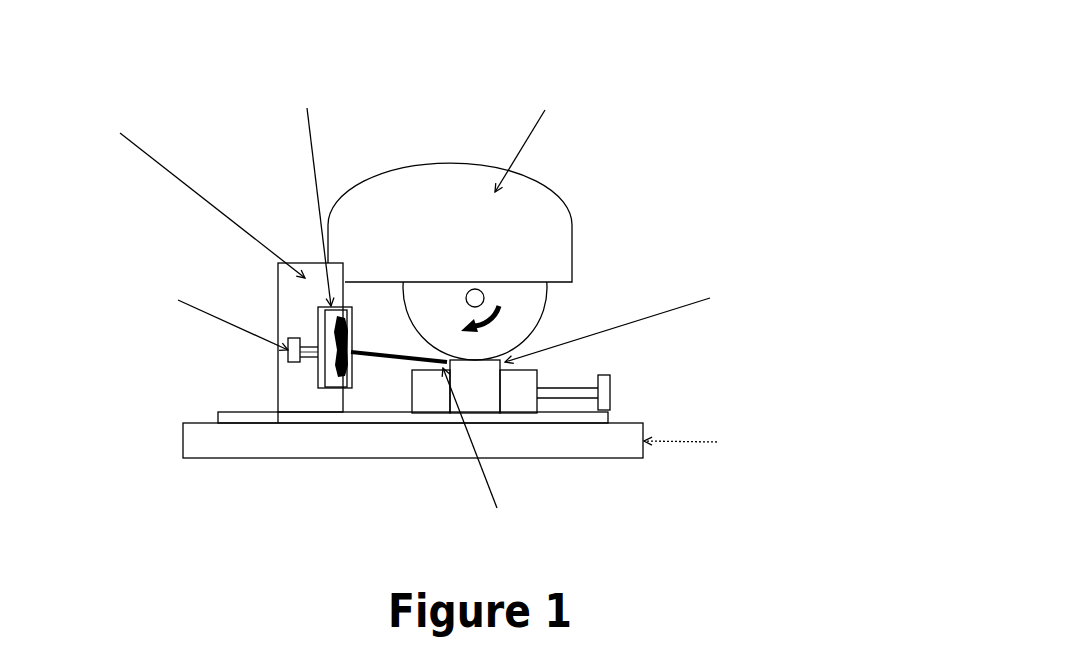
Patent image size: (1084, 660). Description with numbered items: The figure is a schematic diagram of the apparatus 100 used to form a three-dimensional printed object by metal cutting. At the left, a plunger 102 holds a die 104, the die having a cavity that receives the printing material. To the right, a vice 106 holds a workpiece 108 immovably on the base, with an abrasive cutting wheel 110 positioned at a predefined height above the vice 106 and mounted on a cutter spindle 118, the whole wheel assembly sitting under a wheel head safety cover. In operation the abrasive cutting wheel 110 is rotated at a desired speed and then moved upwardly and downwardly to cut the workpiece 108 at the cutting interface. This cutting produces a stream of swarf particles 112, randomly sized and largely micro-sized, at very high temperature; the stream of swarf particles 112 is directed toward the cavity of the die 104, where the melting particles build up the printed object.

The apparatus 100 is at (200, 72).
The plunger 102 is at (323, 364).
The die 104 is at (316, 392).
The vice 106 is at (540, 378).
The workpiece 108 is at (485, 397).
The abrasive cutting wheel 110 is at (538, 307).
The stream of swarf particles 112 is at (382, 362).
The cutter spindle 118 is at (486, 296).